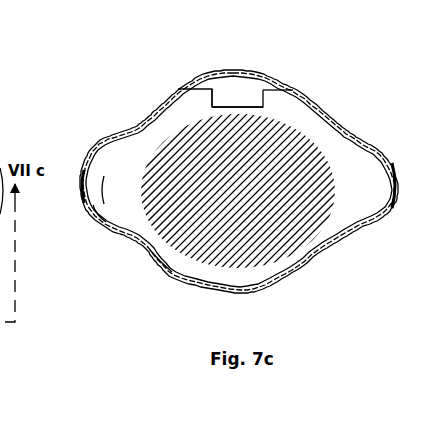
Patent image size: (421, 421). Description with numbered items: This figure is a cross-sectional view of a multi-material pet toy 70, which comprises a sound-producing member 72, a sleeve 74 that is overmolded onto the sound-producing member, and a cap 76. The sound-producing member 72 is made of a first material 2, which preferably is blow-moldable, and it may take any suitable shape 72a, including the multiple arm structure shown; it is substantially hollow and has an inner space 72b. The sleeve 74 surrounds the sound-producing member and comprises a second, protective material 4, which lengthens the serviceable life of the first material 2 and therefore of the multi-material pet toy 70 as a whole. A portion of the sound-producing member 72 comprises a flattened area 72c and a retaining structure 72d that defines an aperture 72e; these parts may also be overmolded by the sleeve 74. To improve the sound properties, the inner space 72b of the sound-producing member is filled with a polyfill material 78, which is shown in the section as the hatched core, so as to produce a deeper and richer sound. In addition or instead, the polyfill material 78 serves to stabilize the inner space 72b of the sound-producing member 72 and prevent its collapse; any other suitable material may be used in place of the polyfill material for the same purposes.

The multi-material pet toy 70 is at (92, 87).
The sound-producing member 72 is at (323, 110).
The shape 72a is at (317, 123).
The inner space 72b is at (140, 189).
The flattened area 72c is at (303, 92).
The retaining structure 72d is at (216, 100).
The aperture 72e is at (233, 107).
The sleeve 74 is at (92, 147).
The cap 76 is at (267, 70).
The polyfill material 78 is at (303, 233).
The second material 4 is at (97, 215).
The first material 2 is at (156, 247).